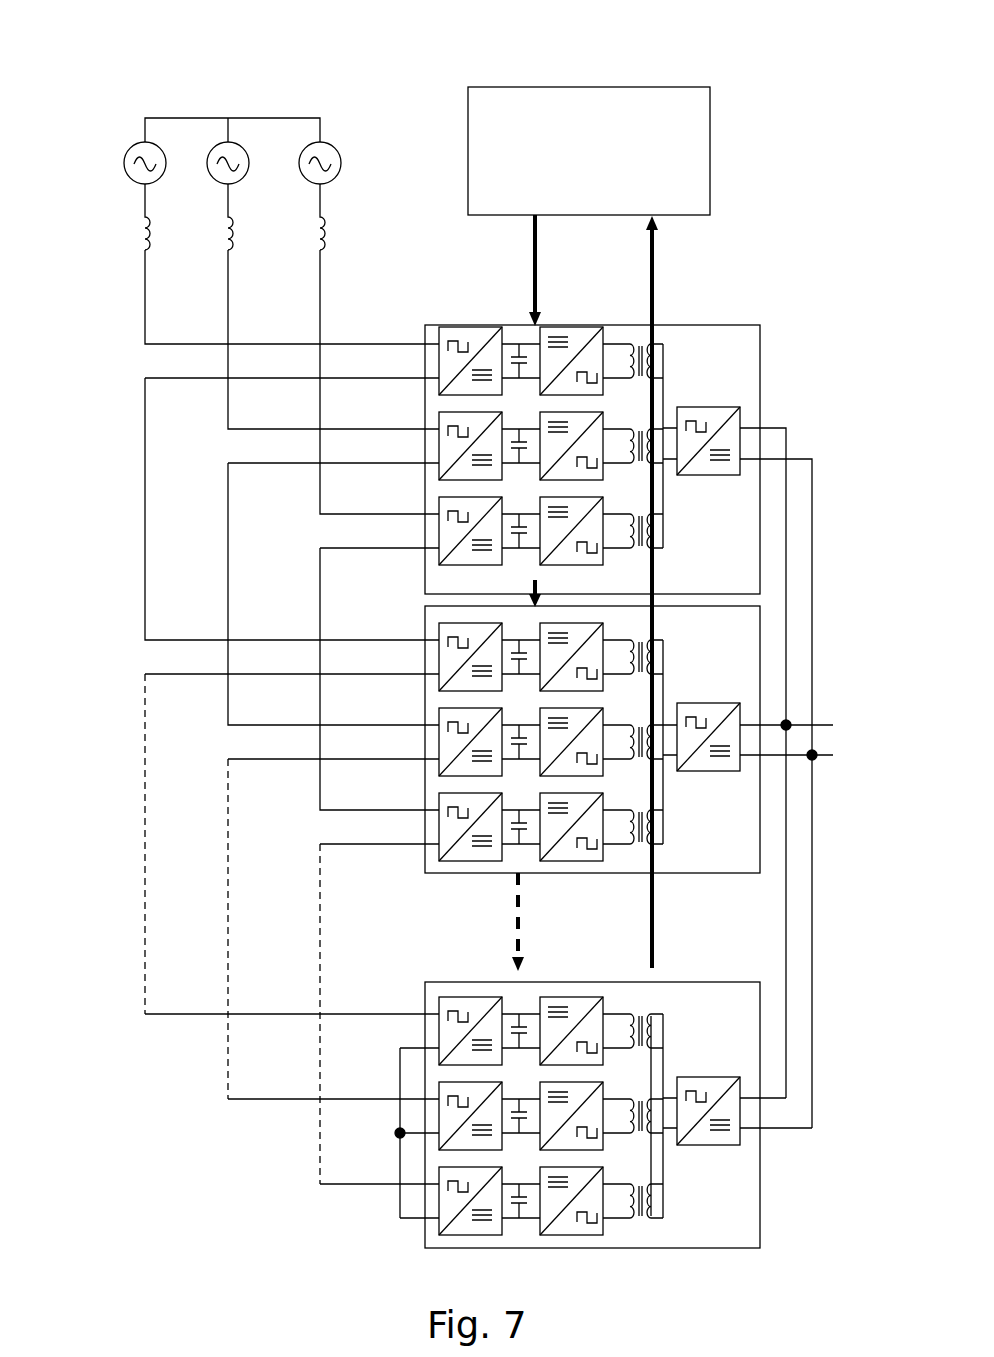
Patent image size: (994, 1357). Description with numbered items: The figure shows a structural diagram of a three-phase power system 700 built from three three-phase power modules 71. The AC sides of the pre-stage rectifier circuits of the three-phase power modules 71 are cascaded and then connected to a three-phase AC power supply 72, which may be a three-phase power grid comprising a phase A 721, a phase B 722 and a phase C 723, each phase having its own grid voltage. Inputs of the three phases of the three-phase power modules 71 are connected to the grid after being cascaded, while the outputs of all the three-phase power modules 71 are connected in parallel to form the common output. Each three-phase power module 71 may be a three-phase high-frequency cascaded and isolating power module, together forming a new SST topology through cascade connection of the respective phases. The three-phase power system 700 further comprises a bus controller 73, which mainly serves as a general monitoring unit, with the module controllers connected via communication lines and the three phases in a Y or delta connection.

The three-phase power system 700 is at (428, 53).
The three-phase AC power supply 72 is at (262, 50).
The phase A 721 is at (138, 142).
The phase B 722 is at (219, 142).
The phase C 723 is at (309, 142).
The bus controller 73 is at (674, 110).
The three-phase power module 71 is at (725, 373).